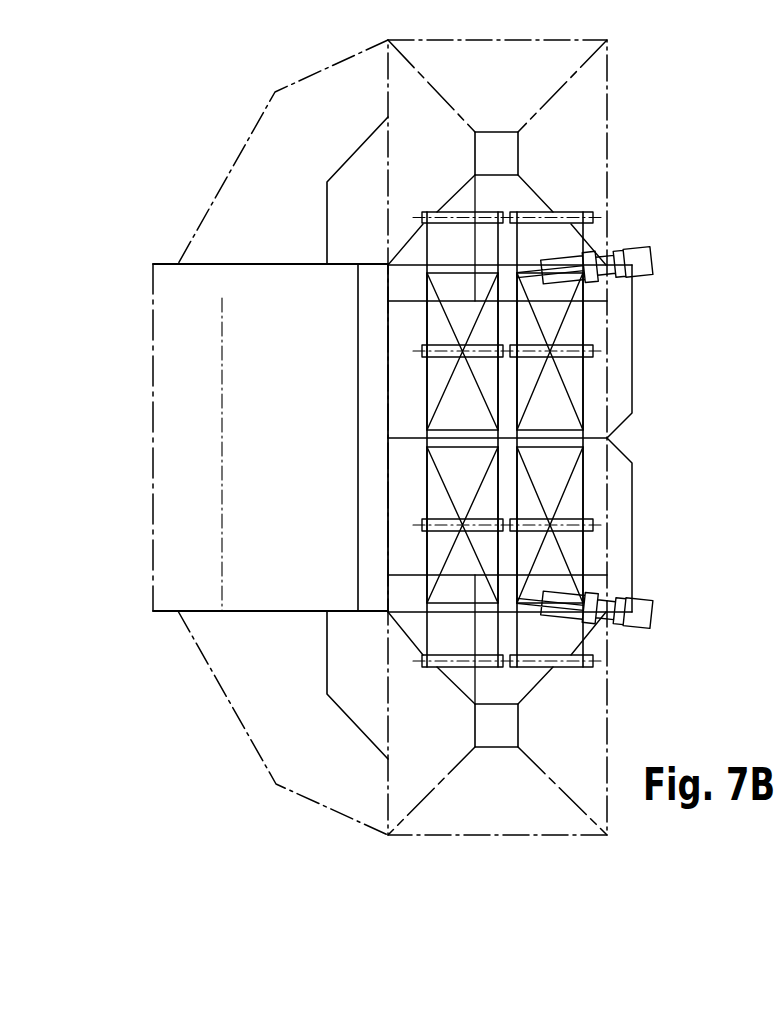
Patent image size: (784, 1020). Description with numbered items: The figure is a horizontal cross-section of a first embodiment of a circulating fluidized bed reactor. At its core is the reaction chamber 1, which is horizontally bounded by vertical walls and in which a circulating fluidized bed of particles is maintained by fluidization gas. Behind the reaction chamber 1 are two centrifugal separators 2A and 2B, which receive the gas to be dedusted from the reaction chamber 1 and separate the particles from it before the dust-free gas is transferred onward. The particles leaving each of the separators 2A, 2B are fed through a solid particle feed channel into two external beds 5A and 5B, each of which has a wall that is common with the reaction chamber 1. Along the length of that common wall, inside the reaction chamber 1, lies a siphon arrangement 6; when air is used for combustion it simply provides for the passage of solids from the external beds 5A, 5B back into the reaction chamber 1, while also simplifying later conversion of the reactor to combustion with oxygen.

The reaction chamber 1 is at (270, 437).
The centrifugal separator 2A is at (577, 130).
The centrifugal separator 2B is at (560, 729).
The external bed 5A is at (571, 376).
The external bed 5B is at (575, 499).
The siphon arrangement 6 is at (373, 352).